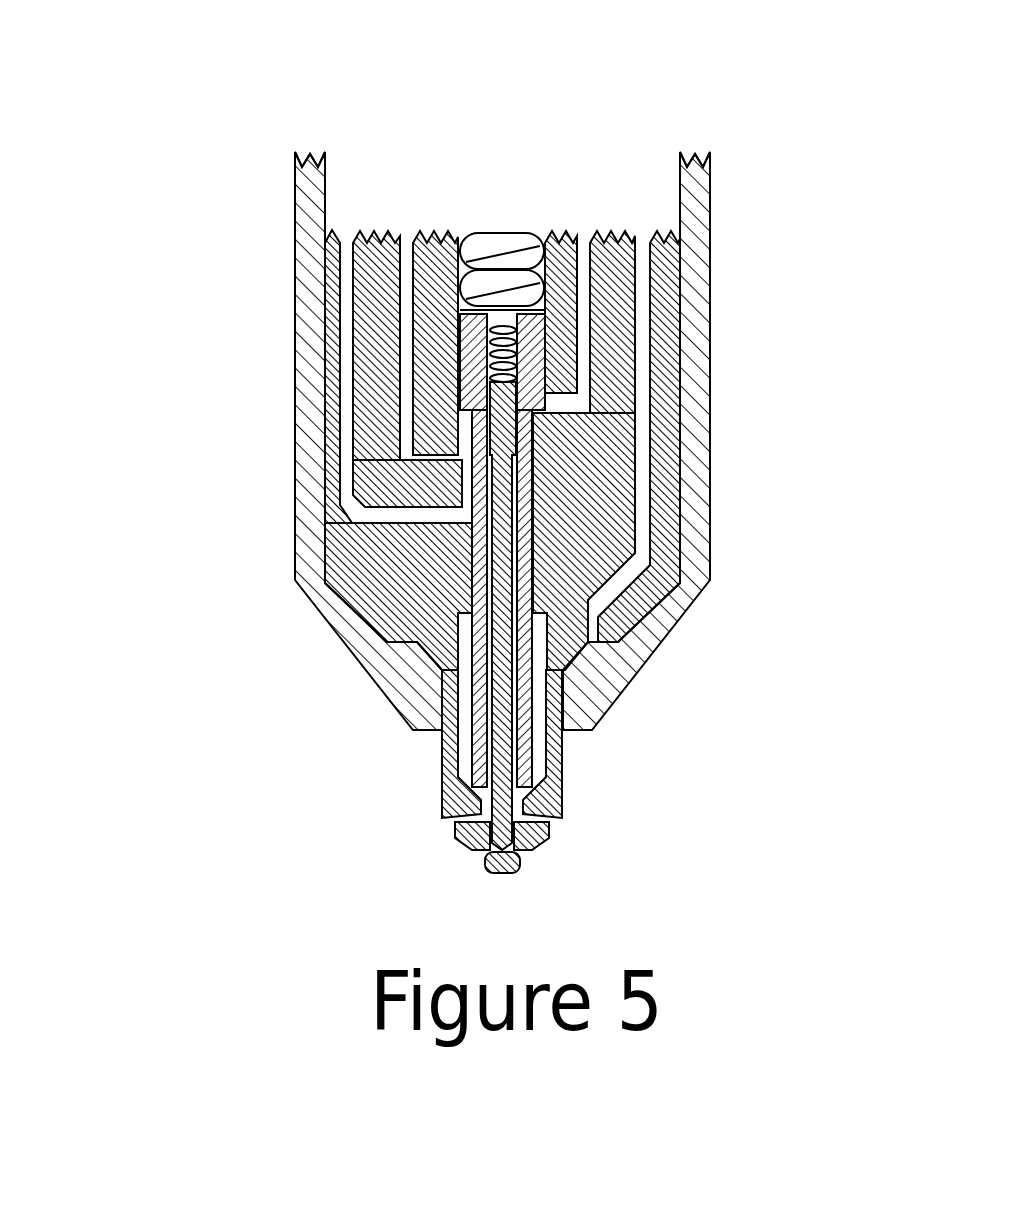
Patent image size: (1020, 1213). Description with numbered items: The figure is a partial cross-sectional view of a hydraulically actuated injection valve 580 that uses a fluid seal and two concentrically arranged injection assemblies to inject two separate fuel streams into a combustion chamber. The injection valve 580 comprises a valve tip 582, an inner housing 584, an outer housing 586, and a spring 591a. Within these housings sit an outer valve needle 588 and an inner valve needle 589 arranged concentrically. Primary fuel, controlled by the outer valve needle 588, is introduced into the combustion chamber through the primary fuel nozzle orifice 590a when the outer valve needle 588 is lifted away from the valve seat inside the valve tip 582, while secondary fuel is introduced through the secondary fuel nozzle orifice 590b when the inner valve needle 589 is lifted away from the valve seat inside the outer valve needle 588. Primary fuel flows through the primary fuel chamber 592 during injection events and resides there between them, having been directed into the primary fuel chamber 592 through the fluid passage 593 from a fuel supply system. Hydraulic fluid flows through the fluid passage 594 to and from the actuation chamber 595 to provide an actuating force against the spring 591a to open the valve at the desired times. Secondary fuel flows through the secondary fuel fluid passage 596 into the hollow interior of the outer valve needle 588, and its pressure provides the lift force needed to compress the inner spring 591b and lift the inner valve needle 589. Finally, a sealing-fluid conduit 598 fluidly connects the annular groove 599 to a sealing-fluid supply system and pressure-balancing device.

The injection valve 580 is at (318, 85).
The valve tip 582 is at (357, 746).
The inner housing 584 is at (623, 330).
The outer housing 586 is at (692, 250).
The outer valve needle 588 is at (528, 430).
The inner valve needle 589 is at (535, 445).
The primary fuel nozzle orifice 590a is at (452, 825).
The secondary fuel nozzle orifice 590b is at (550, 840).
The spring 591a is at (495, 250).
The inner spring 591b is at (465, 340).
The primary fuel chamber 592 is at (547, 733).
The fluid passage 593 is at (643, 513).
The fluid passage 594 is at (582, 263).
The actuation chamber 595 is at (463, 400).
The secondary fuel fluid passage 596 is at (405, 268).
The sealing-fluid conduit 598 is at (343, 415).
The annular groove 599 is at (459, 508).